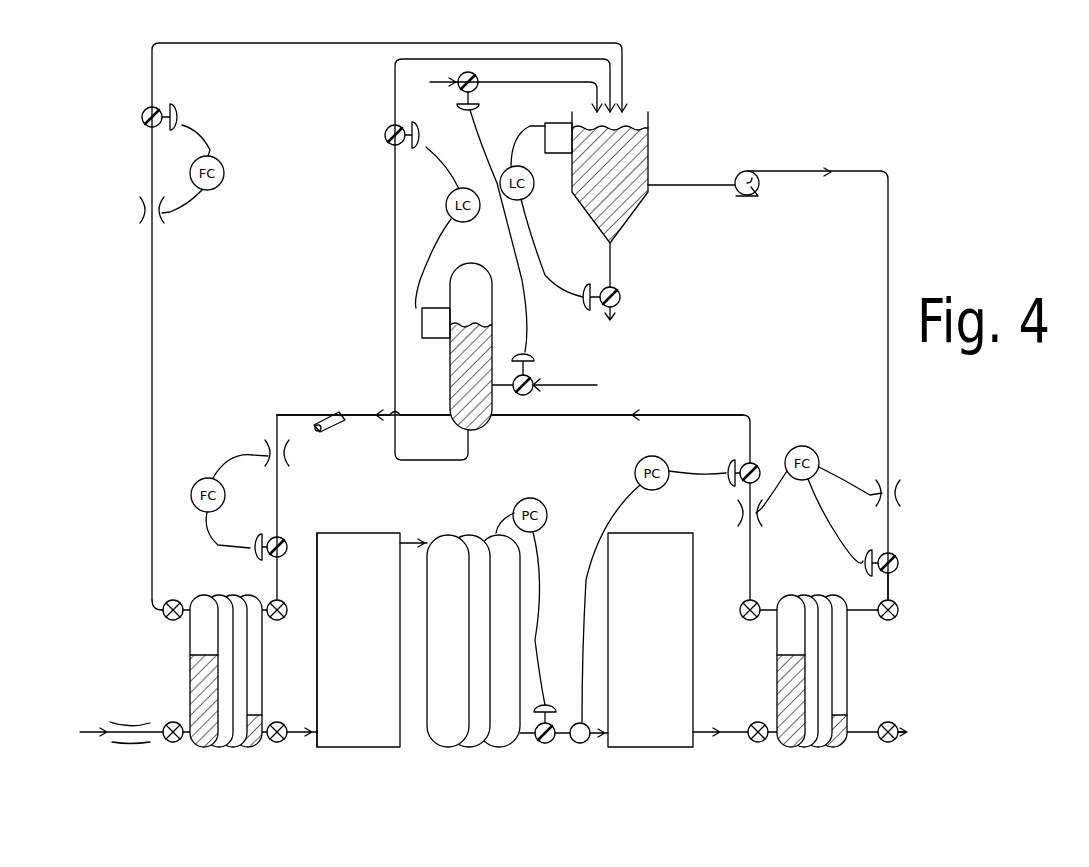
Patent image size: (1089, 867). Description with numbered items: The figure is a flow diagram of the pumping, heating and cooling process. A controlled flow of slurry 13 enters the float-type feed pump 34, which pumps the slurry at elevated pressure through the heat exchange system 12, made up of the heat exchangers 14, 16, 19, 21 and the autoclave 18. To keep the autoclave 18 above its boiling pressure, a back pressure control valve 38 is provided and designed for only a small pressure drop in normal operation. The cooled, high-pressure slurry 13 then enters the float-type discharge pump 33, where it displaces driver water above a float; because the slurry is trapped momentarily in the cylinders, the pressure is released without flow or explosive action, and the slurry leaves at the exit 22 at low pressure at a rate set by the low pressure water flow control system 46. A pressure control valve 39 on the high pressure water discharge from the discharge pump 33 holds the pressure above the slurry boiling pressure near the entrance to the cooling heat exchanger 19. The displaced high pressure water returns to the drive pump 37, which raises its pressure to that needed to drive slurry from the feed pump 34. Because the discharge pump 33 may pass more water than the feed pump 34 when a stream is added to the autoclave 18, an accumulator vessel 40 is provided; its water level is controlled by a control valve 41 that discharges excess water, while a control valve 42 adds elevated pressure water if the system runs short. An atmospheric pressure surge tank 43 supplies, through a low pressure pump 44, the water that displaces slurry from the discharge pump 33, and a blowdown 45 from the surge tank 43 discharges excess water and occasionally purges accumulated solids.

The heat exchange system 12 is at (366, 797).
The slurry 13 is at (148, 722).
The heat exchanger 14 is at (358, 640).
The heat exchanger 16 is at (358, 640).
The autoclave 18 is at (473, 641).
The cooling heat exchanger 19 is at (650, 640).
The heat exchanger 21 is at (650, 640).
The exit 22 is at (883, 722).
The float-type discharge pump 33 is at (812, 750).
The float-type feed pump 34 is at (208, 750).
The drive pump 37 is at (335, 411).
The back pressure control valve 38 is at (548, 750).
The pressure control valve 39 is at (727, 483).
The accumulator vessel 40 is at (482, 432).
The control valve 41 is at (385, 130).
The control valve 42 is at (531, 377).
The atmospheric pressure surge tank 43 is at (650, 129).
The low pressure pump 44 is at (760, 192).
The blowdown 45 is at (622, 292).
The low pressure water flow control system 46 is at (800, 446).